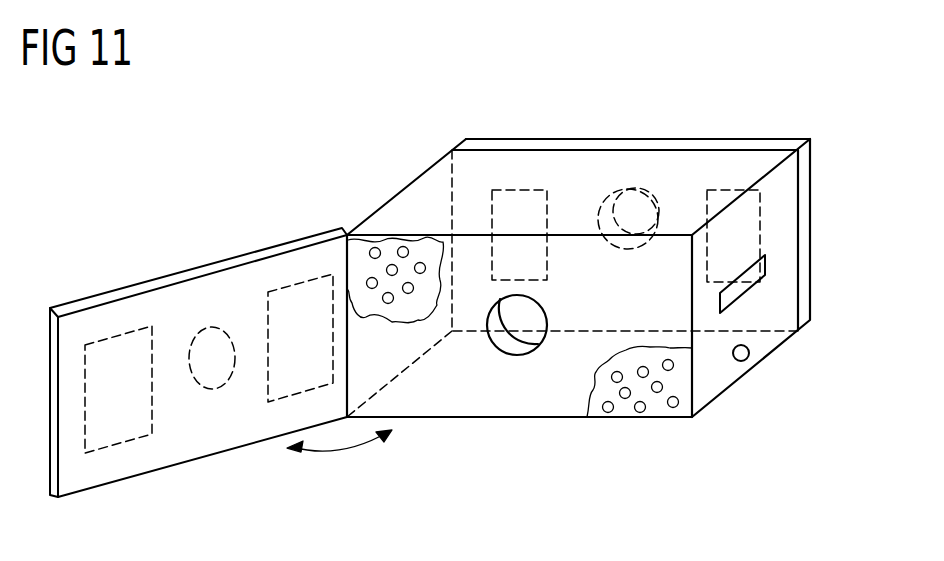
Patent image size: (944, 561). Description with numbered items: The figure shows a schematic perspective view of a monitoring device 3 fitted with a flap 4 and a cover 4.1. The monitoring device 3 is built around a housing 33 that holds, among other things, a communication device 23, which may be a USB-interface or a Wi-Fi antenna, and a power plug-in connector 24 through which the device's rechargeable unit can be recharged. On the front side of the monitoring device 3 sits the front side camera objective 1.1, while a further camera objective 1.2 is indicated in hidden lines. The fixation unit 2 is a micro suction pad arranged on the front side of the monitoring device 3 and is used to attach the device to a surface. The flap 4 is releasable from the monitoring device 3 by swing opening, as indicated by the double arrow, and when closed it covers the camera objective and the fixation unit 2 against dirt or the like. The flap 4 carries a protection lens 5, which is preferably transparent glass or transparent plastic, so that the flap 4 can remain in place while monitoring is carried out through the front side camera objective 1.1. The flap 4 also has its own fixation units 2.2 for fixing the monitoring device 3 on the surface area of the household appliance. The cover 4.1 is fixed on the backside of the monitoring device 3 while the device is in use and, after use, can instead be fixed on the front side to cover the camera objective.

The front side camera objective 1.1 is at (513, 345).
The hidden opening 1.2 is at (635, 213).
The fixation unit 2 is at (388, 247).
The fixation units (of the flap) 2.2 is at (113, 347).
The monitoring device 3 is at (500, 167).
The flap 4 is at (183, 463).
The cover 4.1 is at (712, 148).
The protection lens 5 is at (212, 338).
The communication device 23 is at (755, 270).
The power plug-in connector 24 is at (750, 356).
The housing 33 is at (750, 167).